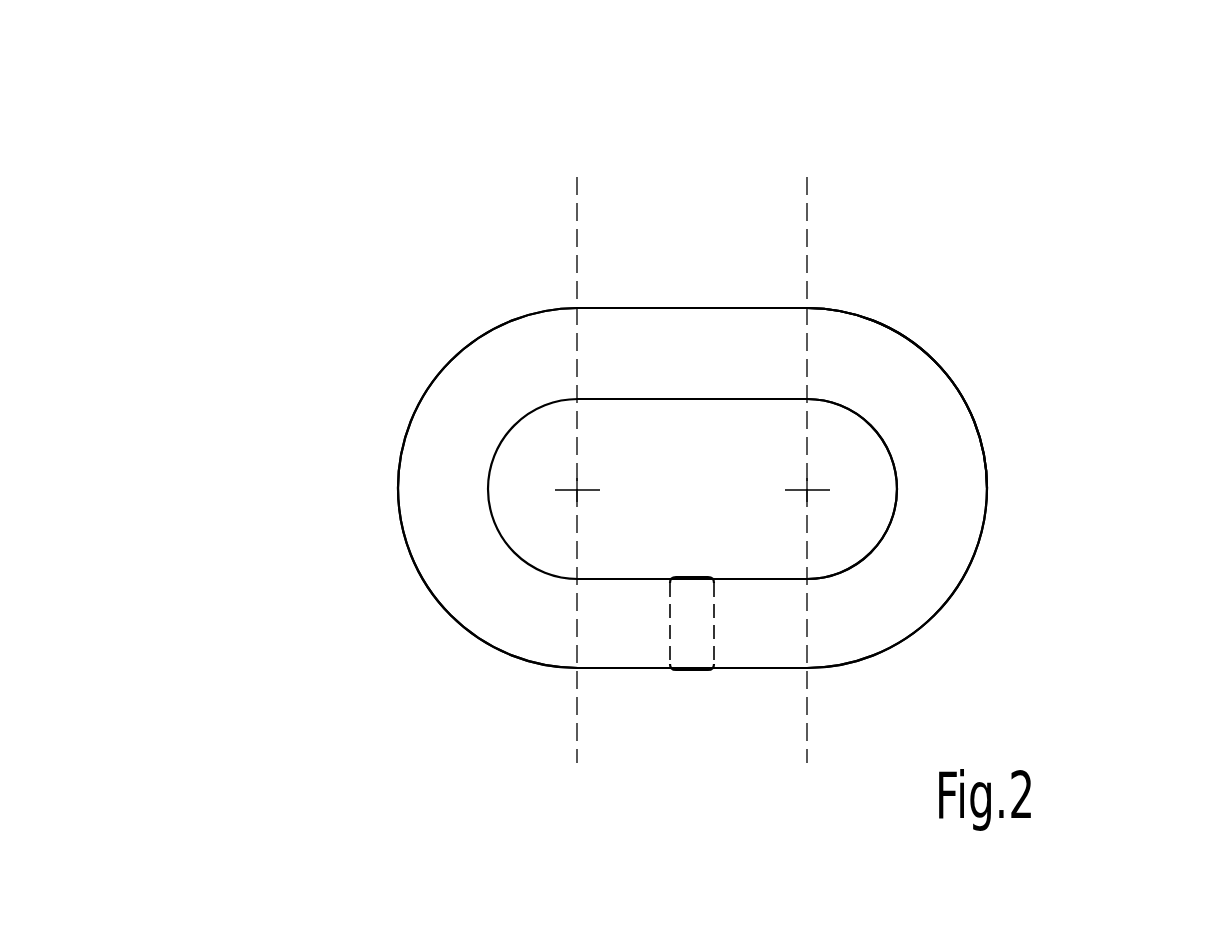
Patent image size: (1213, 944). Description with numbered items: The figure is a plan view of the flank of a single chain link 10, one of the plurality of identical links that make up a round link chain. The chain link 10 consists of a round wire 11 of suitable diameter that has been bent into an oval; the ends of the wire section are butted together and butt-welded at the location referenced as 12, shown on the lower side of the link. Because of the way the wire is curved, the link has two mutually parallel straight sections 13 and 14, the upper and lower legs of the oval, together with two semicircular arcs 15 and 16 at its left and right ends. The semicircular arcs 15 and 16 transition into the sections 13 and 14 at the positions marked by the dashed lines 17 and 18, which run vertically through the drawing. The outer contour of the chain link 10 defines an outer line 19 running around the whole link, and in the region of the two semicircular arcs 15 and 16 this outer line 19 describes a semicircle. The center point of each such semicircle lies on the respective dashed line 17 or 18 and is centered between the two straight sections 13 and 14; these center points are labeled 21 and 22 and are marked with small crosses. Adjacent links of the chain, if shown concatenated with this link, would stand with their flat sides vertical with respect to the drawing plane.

The chain link 10 is at (930, 215).
The round wire 11 is at (957, 440).
The butt-weld location 12 is at (697, 672).
The straight section 13 is at (677, 308).
The straight section 14 is at (646, 578).
The semicircular arc 15 is at (410, 561).
The semicircular arc 16 is at (975, 561).
The dashed line 17 is at (577, 213).
The dashed line 18 is at (807, 213).
The outer line 19 is at (916, 344).
The center point 21 is at (578, 489).
The center point 22 is at (806, 489).